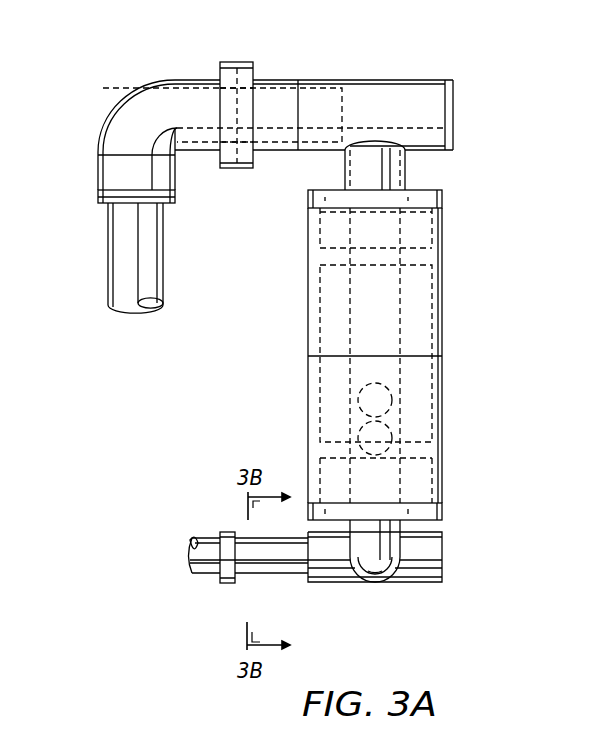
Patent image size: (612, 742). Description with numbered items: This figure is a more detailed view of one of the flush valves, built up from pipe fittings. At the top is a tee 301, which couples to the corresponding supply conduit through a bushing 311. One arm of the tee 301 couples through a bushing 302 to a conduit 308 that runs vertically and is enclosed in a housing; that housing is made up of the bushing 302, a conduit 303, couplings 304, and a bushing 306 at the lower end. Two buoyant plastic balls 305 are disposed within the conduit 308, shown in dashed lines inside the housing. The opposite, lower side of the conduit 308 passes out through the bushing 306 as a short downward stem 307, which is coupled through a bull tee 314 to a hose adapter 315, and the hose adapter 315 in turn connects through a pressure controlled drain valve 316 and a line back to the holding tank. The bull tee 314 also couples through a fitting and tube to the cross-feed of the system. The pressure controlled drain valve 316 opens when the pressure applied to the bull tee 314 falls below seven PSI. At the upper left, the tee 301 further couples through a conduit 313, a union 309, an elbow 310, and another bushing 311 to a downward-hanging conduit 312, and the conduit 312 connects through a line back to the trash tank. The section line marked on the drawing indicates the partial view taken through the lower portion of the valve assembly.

The tee 301 is at (380, 78).
The bushing 302 is at (443, 200).
The conduit 303 is at (318, 312).
The couplings 304 is at (443, 282).
The buoyant plastic balls 305 is at (360, 428).
The bushing 306 is at (442, 512).
The outlet stem 307 is at (402, 548).
The conduit 308 is at (400, 318).
The union 309 is at (232, 62).
The elbow 310 is at (140, 78).
The bushing 311 is at (455, 113).
The conduit 312 is at (108, 248).
The conduit 313 is at (277, 78).
The bull tee 314 is at (442, 553).
The hose adapter 315 is at (293, 578).
The pressure controlled drain valve 316 is at (210, 578).